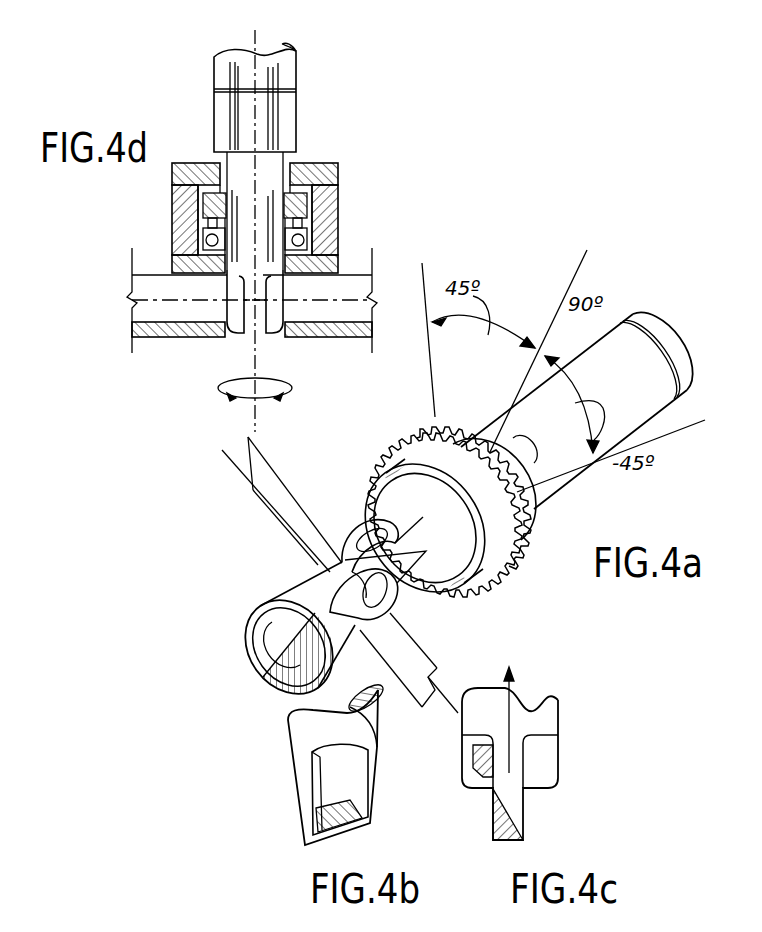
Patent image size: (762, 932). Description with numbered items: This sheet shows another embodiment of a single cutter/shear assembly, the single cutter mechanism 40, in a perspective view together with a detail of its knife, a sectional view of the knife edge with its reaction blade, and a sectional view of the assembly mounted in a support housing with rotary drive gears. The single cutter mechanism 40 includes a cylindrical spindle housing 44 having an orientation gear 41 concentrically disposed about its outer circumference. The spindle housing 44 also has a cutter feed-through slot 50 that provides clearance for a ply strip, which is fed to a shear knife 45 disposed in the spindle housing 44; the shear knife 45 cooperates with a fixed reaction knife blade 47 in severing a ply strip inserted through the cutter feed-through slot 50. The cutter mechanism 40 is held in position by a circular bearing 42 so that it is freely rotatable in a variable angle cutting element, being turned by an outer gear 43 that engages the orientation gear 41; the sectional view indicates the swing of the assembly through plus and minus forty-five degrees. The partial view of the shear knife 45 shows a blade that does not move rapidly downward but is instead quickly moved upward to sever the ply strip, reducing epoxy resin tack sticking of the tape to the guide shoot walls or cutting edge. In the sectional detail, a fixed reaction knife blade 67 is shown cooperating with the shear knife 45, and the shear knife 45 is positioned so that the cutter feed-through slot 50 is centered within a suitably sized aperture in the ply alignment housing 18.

In FIG. 4d, the single cutter mechanism 40 is at (200, 137).
In FIG. 4a, the single cutter mechanism 40 is at (590, 520).
In FIG. 4d, the orientation gear 41 is at (309, 197).
In FIG. 4a, the orientation gear 41 is at (488, 593).
In FIG. 4d, the circular bearing 42 is at (308, 235).
In FIG. 4d, the outer gear 43 is at (172, 211).
In FIG. 4d, the cylindrical spindle housing 44 is at (276, 166).
In FIG. 4a, the cylindrical spindle housing 44 is at (448, 583).
In FIG. 4a, the shear knife 45 is at (378, 622).
In FIG. 4b, the shear knife 45 is at (313, 816).
In FIG. 4c, the shear knife 45 is at (523, 827).
In FIG. 4a, the fixed reaction knife blade 47 is at (298, 693).
In FIG. 4d, the cutter feed-through slot 50 is at (197, 337).
In FIG. 4a, the cutter feed-through slot 50 is at (345, 527).
In FIG. 4d, the ply alignment housing 18 is at (300, 340).
In FIG. 4c, the fixed reaction knife blade 67 is at (473, 760).